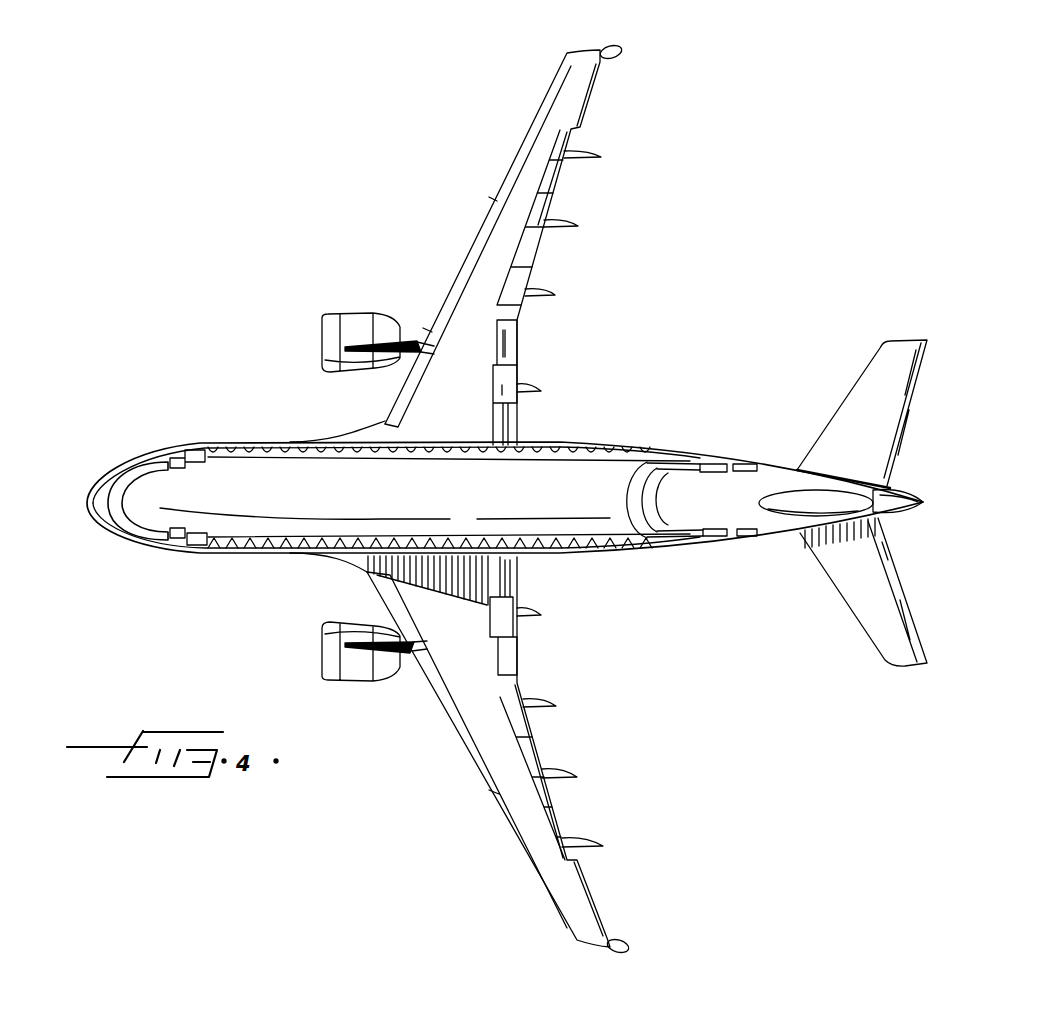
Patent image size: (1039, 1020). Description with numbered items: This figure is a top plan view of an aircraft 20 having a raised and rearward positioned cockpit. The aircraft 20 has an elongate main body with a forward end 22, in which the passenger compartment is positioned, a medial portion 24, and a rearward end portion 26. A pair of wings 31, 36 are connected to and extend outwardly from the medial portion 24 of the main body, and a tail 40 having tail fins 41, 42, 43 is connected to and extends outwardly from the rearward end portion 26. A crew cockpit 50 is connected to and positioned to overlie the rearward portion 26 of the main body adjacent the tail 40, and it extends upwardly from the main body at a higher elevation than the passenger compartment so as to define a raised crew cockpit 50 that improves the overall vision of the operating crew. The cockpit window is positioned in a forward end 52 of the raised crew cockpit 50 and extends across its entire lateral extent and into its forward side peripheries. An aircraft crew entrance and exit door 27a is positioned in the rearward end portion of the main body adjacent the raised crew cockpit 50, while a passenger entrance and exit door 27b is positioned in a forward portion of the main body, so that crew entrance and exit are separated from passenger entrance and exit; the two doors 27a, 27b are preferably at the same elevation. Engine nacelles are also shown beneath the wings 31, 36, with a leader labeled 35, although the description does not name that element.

The aircraft 20 is at (731, 304).
The forward end 22 is at (200, 504).
The medial portion 24 is at (425, 507).
The rearward end portion 26 is at (615, 504).
The aircraft crew entrance and exit door 27a is at (703, 546).
The passenger entrance and exit door 27b is at (219, 391).
The wing 31 is at (475, 646).
The engine 35 is at (340, 316).
The wing 36 is at (465, 408).
The tail 40 is at (876, 503).
The tail fin 41 is at (868, 448).
The tail fin 42 is at (870, 583).
The tail fin 43 is at (890, 484).
The crew cockpit 50 is at (708, 494).
The forward end 52 is at (700, 511).